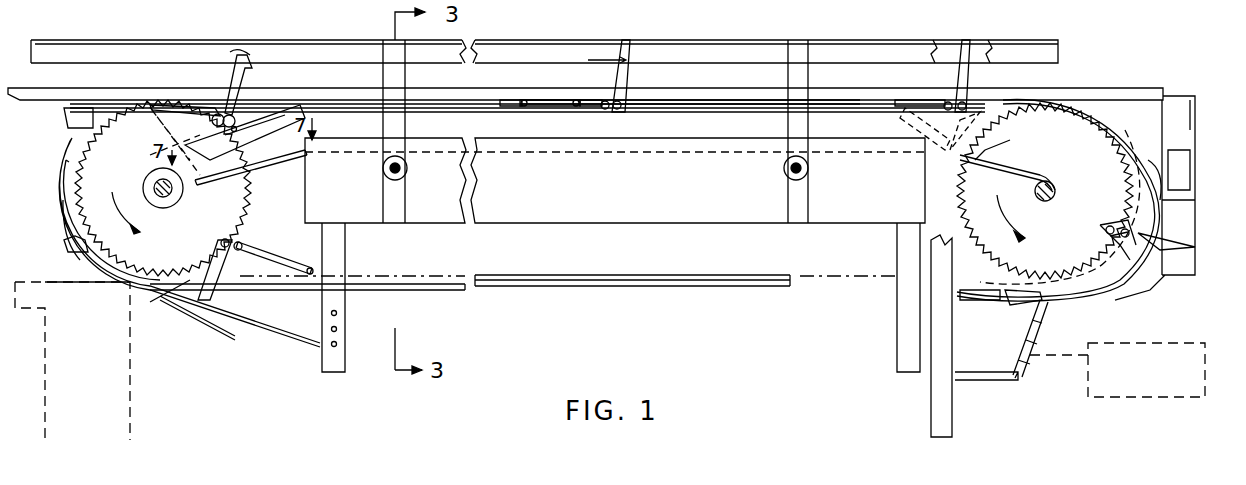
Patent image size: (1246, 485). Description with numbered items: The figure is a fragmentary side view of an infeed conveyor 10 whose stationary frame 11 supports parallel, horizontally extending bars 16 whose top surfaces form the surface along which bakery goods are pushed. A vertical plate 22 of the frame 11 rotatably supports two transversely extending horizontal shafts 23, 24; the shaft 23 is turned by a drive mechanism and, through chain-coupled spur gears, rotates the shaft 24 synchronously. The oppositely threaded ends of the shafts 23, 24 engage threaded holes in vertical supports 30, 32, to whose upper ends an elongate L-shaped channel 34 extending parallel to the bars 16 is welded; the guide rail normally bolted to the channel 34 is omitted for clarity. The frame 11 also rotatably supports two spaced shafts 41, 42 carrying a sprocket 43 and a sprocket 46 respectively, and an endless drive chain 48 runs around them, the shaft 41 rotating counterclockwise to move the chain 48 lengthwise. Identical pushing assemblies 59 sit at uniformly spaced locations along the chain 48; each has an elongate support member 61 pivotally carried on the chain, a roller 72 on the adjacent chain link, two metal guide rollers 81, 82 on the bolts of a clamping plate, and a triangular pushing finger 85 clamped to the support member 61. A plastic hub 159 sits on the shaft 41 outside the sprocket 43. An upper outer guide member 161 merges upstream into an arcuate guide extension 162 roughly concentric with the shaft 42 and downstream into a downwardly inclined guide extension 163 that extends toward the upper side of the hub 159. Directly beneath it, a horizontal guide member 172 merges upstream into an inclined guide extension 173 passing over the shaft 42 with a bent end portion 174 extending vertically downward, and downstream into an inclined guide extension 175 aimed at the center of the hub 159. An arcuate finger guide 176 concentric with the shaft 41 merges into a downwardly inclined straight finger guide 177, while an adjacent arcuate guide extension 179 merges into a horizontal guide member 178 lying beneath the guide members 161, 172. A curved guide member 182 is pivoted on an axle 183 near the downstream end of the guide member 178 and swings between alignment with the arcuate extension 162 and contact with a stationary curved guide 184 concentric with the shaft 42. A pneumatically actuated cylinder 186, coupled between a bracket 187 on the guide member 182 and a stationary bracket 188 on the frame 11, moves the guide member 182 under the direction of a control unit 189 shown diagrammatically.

The infeed conveyor 10 is at (1150, 62).
The stationary frame 11 is at (897, 330).
The bars 16 is at (712, 95).
The vertical plate 22 is at (622, 212).
The shaft 23 is at (400, 178).
The shaft 24 is at (790, 178).
The vertical support 30 is at (397, 212).
The vertical support 32 is at (800, 215).
The L-shaped channel 34 is at (350, 48).
The shaft 41 is at (163, 208).
The shaft 42 is at (1045, 201).
The sprocket 43 is at (65, 185).
The sprocket 46 is at (1075, 125).
The endless drive chain 48 is at (800, 288).
The pushing assembly 59 is at (612, 60).
The support member 61 is at (560, 110).
The roller 72 is at (515, 110).
The guide roller 81 is at (594, 110).
The guide roller 82 is at (614, 110).
The pushing finger 85 is at (625, 75).
The plastic hub 159 is at (155, 180).
The upper outer guide member 161 is at (780, 112).
The arcuate guide extension 162 is at (1100, 116).
The downwardly inclined guide extension 163 is at (250, 94).
The horizontal guide member 172 is at (658, 152).
The inclined guide extension 173 is at (1025, 164).
The end portion 174 is at (1056, 185).
The inclined guide extension 175 is at (282, 152).
The arcuate finger guide 176 is at (62, 212).
The straight finger guide 177 is at (268, 334).
The horizontally extending guide member 178 is at (390, 282).
The arcuate guide extension 179 is at (62, 150).
The curved guide member 182 is at (1088, 255).
The axle 183 is at (1002, 300).
The stationary curved guide 184 is at (1175, 235).
The pneumatically-actuated cylinder 186 is at (1035, 348).
The bracket 187 is at (1048, 298).
The stationary bracket 188 is at (985, 382).
The control unit 189 is at (1175, 342).